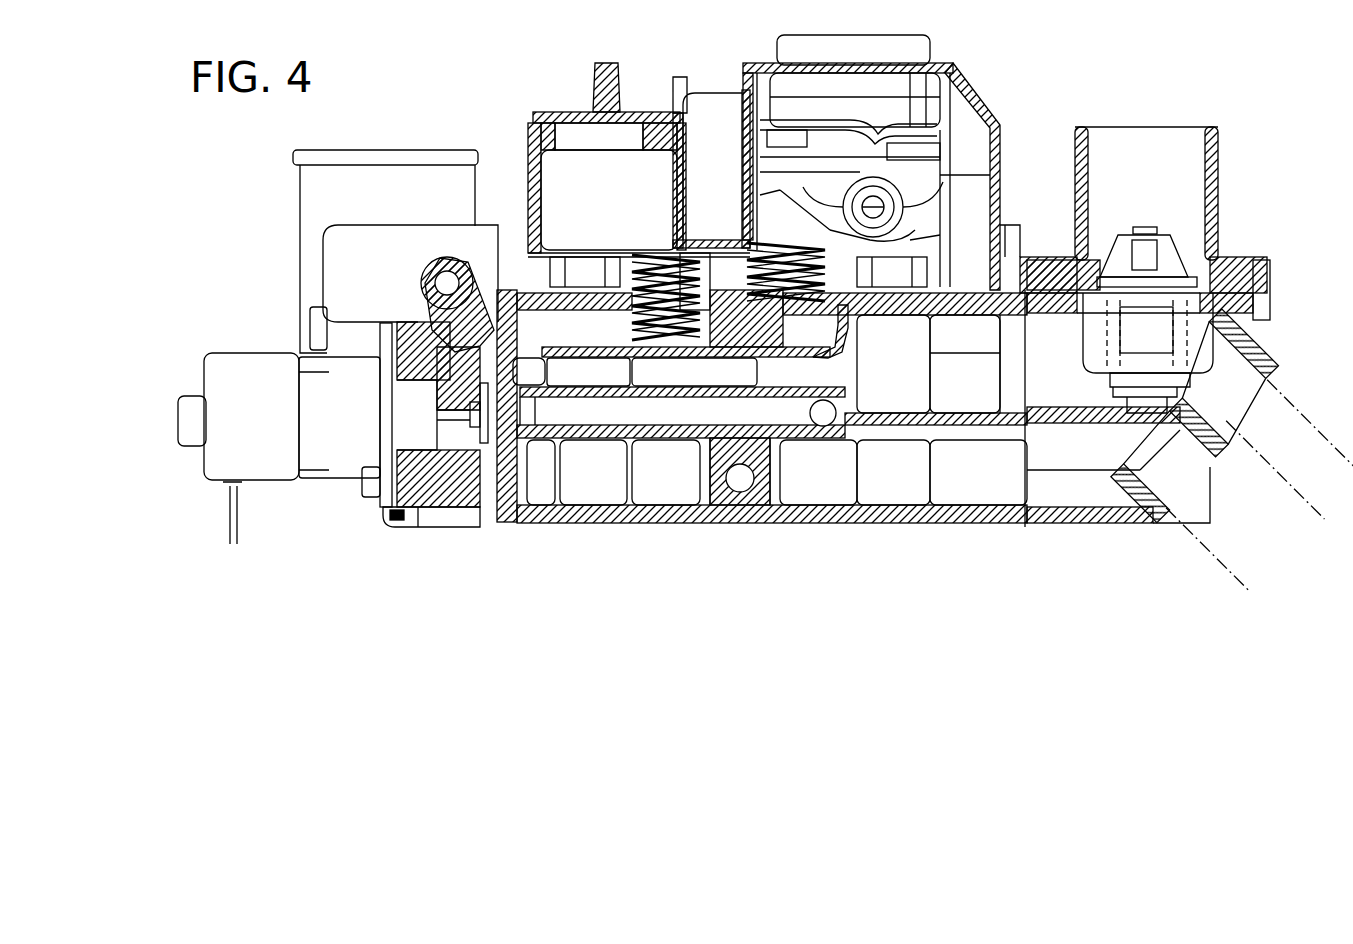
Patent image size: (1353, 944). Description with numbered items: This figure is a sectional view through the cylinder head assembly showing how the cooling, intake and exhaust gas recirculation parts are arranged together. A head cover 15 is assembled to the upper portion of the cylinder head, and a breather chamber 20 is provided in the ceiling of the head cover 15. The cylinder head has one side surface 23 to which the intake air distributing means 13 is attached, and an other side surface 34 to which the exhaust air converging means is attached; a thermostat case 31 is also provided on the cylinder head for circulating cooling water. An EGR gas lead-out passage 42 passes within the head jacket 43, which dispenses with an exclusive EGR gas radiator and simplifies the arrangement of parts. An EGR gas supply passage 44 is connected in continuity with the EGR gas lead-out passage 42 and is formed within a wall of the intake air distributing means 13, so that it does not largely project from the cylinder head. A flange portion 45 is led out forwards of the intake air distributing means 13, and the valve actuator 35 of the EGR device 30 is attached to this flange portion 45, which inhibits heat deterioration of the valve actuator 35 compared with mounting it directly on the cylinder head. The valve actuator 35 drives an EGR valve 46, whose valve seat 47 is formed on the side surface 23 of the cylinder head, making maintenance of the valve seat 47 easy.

The intake air distributing means 13 is at (403, 320).
The head cover 15 is at (991, 116).
The breather chamber 20 is at (922, 92).
The one side surface 23 is at (490, 500).
The EGR device 30 is at (339, 497).
The thermostat case 31 is at (1246, 250).
The other side surface 34 is at (1033, 487).
The valve actuator 35 is at (225, 457).
The EGR gas lead-out passage 42 is at (812, 430).
The head jacket 43 is at (835, 487).
The EGR gas supply passage 44 is at (447, 283).
The flange portion 45 is at (440, 497).
The EGR valve 46 is at (481, 443).
The valve seat 47 is at (520, 480).